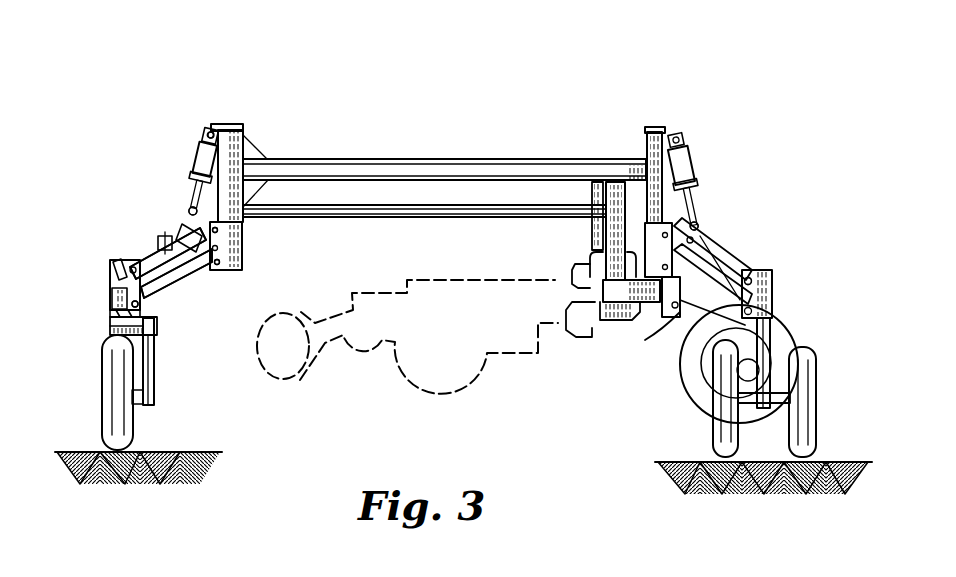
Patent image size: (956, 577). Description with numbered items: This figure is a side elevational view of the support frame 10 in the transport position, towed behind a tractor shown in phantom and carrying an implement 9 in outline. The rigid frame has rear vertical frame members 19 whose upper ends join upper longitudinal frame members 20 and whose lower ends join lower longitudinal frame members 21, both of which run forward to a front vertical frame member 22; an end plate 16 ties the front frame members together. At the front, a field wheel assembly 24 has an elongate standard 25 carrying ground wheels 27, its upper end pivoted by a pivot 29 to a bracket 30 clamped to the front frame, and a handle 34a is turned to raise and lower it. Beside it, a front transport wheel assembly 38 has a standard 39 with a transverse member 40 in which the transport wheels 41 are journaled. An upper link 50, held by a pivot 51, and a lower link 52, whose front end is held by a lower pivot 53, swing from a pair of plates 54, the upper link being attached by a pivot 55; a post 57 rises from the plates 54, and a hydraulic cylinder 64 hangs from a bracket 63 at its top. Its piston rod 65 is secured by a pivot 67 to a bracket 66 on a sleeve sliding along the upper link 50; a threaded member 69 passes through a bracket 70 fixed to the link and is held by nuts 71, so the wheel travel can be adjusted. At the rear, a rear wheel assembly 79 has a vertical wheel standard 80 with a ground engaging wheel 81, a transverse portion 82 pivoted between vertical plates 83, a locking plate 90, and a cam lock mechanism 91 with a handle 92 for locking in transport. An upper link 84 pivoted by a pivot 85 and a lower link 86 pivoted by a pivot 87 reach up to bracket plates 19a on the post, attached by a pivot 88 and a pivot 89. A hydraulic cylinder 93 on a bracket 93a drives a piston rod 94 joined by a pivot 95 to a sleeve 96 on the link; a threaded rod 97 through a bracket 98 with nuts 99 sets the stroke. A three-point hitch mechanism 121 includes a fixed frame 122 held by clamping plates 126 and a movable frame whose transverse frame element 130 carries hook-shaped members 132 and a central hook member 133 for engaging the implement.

The support frame 10 is at (113, 93).
The rear wheel assembly 79 is at (123, 165).
The implement 9 is at (397, 392).
The end plate 16 is at (615, 322).
The rear vertical frame member 19 is at (246, 142).
The bracket plates 19a is at (243, 258).
The upper longitudinal frame member 20 is at (425, 160).
The lower longitudinal frame member 21 is at (418, 205).
The front vertical frame member 22 is at (606, 228).
The field wheel assembly 24 is at (680, 378).
The standard 25 is at (692, 326).
The ground wheel 27 is at (695, 392).
The pivot 29 is at (686, 320).
The bracket 30 is at (672, 312).
The handle 34a is at (660, 232).
The front transport wheel assembly 38 is at (790, 280).
The standard 39 is at (772, 343).
The transverse member 40 is at (748, 430).
The transport wheel 41 is at (713, 444).
The upper link 50 is at (753, 277).
The pivot 51 is at (766, 280).
The lower link 52 is at (772, 293).
The lower pin 53 is at (766, 311).
The plates 54 is at (594, 200).
The pivot 55 is at (657, 246).
The post 57 is at (648, 140).
The bracket 63 is at (652, 128).
The hydraulic cylinder 64 is at (689, 160).
The piston rod 65 is at (700, 190).
The bracket 66 is at (720, 244).
The pivot 67 is at (700, 228).
The threaded member 69 is at (716, 250).
The bracket 70 is at (736, 276).
The nuts 71 is at (736, 262).
The wheel standard 80 is at (155, 386).
The ground engaging wheel 81 is at (104, 426).
The transverse portion 82 is at (152, 330).
The vertical plates 83 is at (110, 288).
The upper link 84 is at (145, 262).
The pivot 85 is at (135, 273).
The lower link 86 is at (216, 272).
The pivot 87 is at (140, 306).
The pivot 88 is at (243, 243).
The pivot 89 is at (221, 266).
The locking plate 90 is at (112, 318).
The cam lock mechanism 91 is at (108, 300).
The handle 92 is at (114, 268).
The hydraulic cylinder 93 is at (204, 134).
The bracket 93a is at (210, 128).
The piston rod 94 is at (199, 176).
The pivot 95 is at (222, 215).
The sleeve 96 is at (200, 280).
The threaded rod 97 is at (192, 208).
The bracket 98 is at (176, 238).
The nuts 99 is at (166, 236).
The 3-point hitch mechanism 121 is at (566, 295).
The fixed frame 122 is at (605, 334).
The clamping plates 126 is at (592, 256).
The transverse frame element 130 is at (603, 292).
The hook-shaped member 132 is at (576, 333).
The central hook member 133 is at (572, 278).